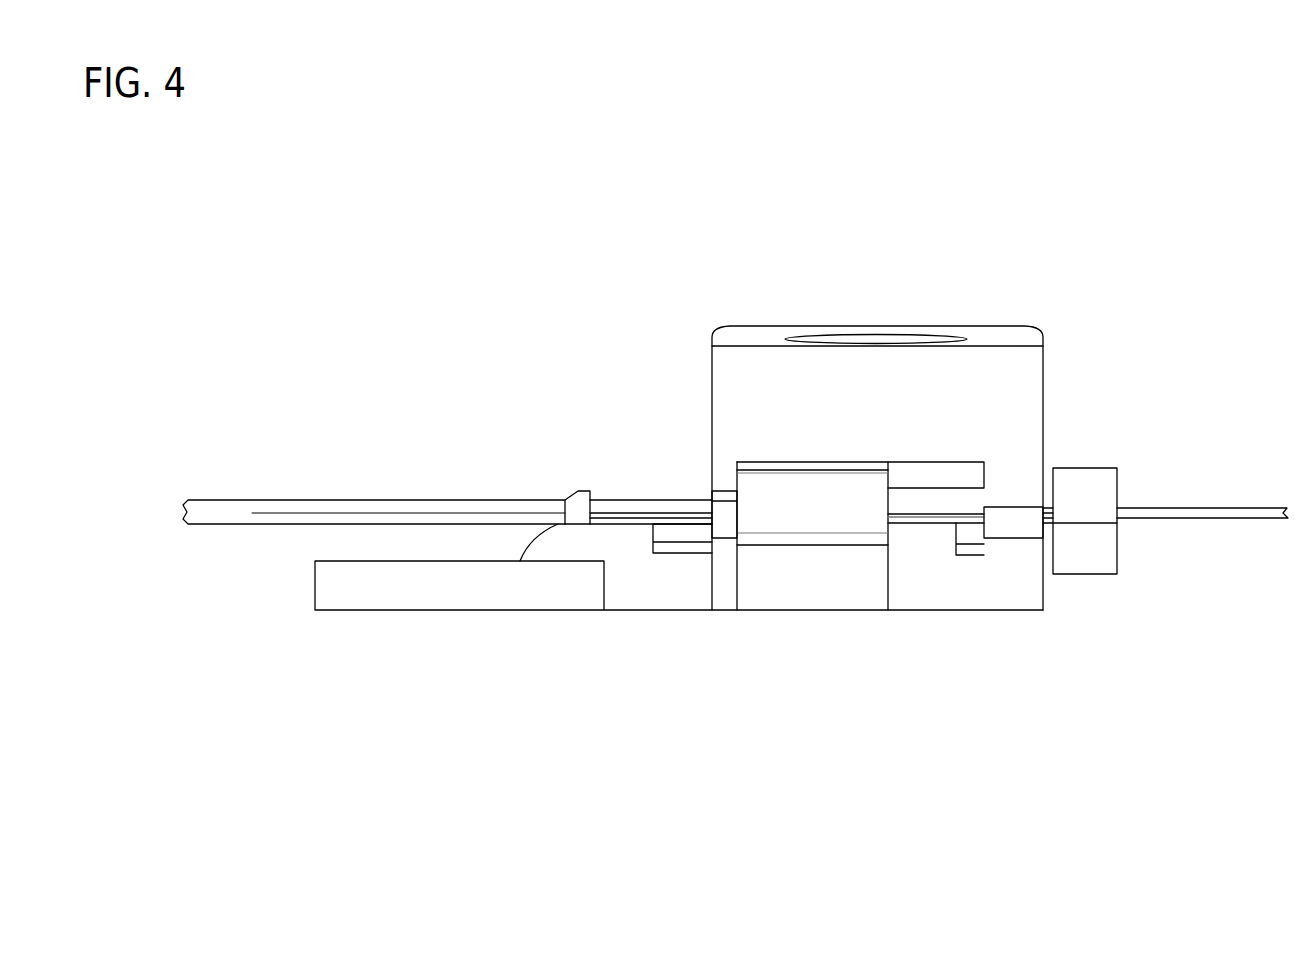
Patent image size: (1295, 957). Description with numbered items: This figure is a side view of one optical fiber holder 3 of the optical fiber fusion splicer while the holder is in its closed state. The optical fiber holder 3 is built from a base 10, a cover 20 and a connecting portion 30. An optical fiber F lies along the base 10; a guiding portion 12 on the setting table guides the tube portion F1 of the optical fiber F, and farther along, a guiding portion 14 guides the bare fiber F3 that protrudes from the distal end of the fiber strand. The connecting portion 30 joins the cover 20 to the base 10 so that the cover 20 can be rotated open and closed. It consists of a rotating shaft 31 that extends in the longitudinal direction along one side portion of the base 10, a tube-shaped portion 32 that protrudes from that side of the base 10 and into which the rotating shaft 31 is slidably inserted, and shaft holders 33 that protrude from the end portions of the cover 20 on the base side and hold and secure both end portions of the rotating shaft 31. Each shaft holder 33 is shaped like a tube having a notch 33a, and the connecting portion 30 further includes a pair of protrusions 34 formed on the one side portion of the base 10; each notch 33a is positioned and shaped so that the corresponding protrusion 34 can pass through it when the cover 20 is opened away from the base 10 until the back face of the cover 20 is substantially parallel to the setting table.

The optical fiber holder 3 is at (449, 334).
The base 10 is at (625, 586).
The guiding portion 12 is at (582, 495).
The guiding portion 14 is at (1102, 555).
The cover 20 is at (1032, 378).
The connecting portion 30 is at (1054, 450).
The rotating shaft 31 is at (922, 500).
The tube-shaped portion 32 is at (811, 512).
The shaft holder 33 is at (727, 532).
The notch 33a is at (728, 503).
The protrusion 34 is at (675, 546).
The optical fiber F is at (229, 502).
The tube portion F1 is at (648, 500).
The bare fiber F3 is at (1225, 506).